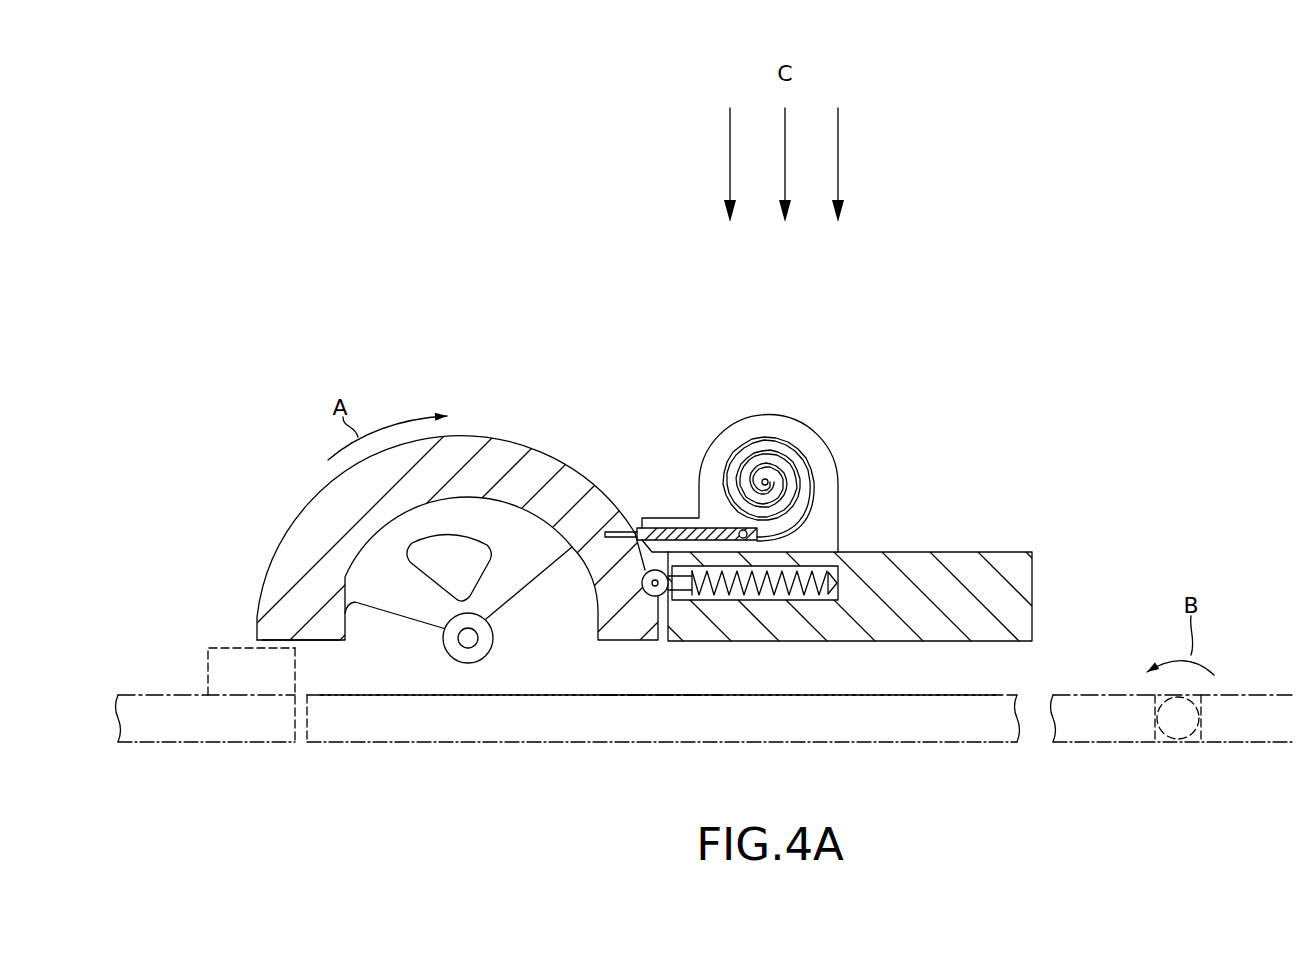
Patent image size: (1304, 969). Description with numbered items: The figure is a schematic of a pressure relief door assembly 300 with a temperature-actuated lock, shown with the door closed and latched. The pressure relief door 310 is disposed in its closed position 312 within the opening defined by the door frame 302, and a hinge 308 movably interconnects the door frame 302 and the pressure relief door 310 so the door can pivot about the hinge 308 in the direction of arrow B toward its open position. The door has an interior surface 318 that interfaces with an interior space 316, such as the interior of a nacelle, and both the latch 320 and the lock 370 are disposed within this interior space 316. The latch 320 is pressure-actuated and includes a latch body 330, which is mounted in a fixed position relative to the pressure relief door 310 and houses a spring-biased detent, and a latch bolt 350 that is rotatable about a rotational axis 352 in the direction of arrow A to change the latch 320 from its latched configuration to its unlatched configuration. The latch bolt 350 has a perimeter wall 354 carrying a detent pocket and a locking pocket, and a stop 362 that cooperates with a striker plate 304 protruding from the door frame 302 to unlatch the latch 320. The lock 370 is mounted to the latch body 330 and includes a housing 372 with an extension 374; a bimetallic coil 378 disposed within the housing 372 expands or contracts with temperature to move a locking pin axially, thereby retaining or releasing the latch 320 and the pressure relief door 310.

The pressure relief door assembly 300 is at (1078, 280).
The door frame 302 is at (185, 743).
The striker plate 304 is at (208, 667).
The hinge 308 is at (1184, 741).
The pressure relief door 310 is at (443, 743).
The closed position 312 is at (1094, 507).
The interior space 316 is at (893, 319).
The interior surface 318 is at (657, 695).
The latch 320 is at (925, 410).
The latch body 330 is at (965, 551).
The latch bolt 350 is at (525, 412).
The rotational axis 352 is at (469, 639).
The perimeter wall 354 is at (480, 438).
The stop 362 is at (310, 640).
The lock 370 is at (792, 378).
The housing 372 is at (744, 412).
The extension 374 is at (668, 517).
The bimetallic coil 378 is at (841, 501).